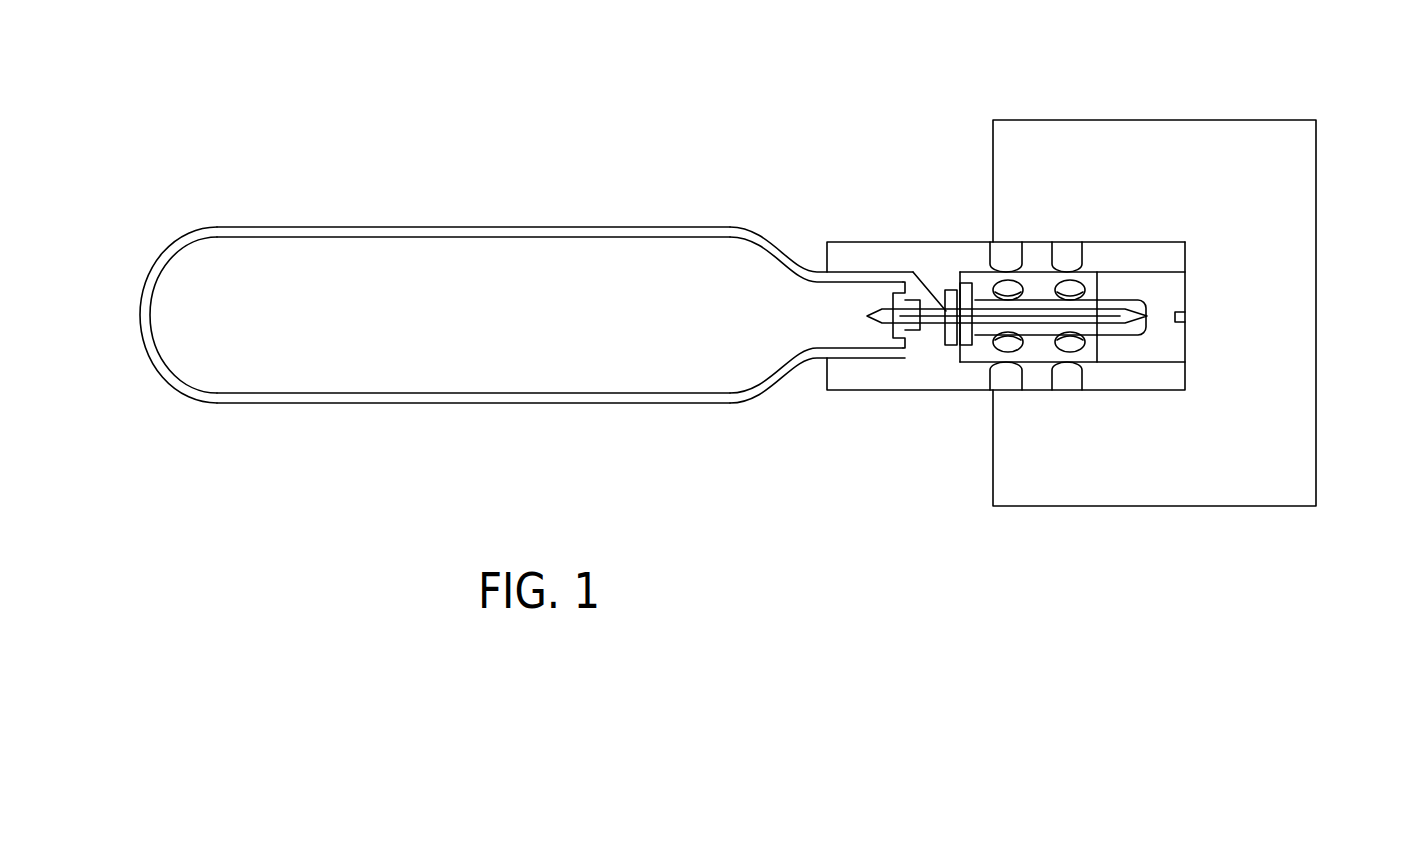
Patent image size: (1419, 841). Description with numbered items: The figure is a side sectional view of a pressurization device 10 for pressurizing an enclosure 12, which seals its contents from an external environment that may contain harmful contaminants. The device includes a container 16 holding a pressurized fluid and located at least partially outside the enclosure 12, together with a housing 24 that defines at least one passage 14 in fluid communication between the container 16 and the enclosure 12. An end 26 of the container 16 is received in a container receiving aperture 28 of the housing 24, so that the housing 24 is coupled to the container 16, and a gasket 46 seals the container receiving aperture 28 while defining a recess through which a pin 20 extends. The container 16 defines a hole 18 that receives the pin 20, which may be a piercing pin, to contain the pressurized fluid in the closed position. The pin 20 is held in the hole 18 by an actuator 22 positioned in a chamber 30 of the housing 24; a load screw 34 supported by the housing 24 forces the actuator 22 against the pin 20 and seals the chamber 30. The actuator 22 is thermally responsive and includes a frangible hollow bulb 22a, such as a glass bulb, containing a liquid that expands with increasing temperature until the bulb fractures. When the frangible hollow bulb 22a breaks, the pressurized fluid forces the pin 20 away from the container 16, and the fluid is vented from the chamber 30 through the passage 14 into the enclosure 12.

The pressurization device 10 is at (290, 178).
The enclosure 12 is at (1190, 120).
The passage 14 is at (1008, 378).
The container 16 is at (210, 277).
The hole 18 is at (893, 330).
The pin 20 is at (933, 317).
The actuator 22 is at (978, 350).
The frangible hollow bulb 22a is at (1113, 307).
The housing 24 is at (1155, 392).
The end 26 is at (845, 300).
The container receiving aperture 28 is at (843, 360).
The chamber 30 is at (983, 290).
The load screw 34 is at (1172, 342).
The gasket 46 is at (945, 300).